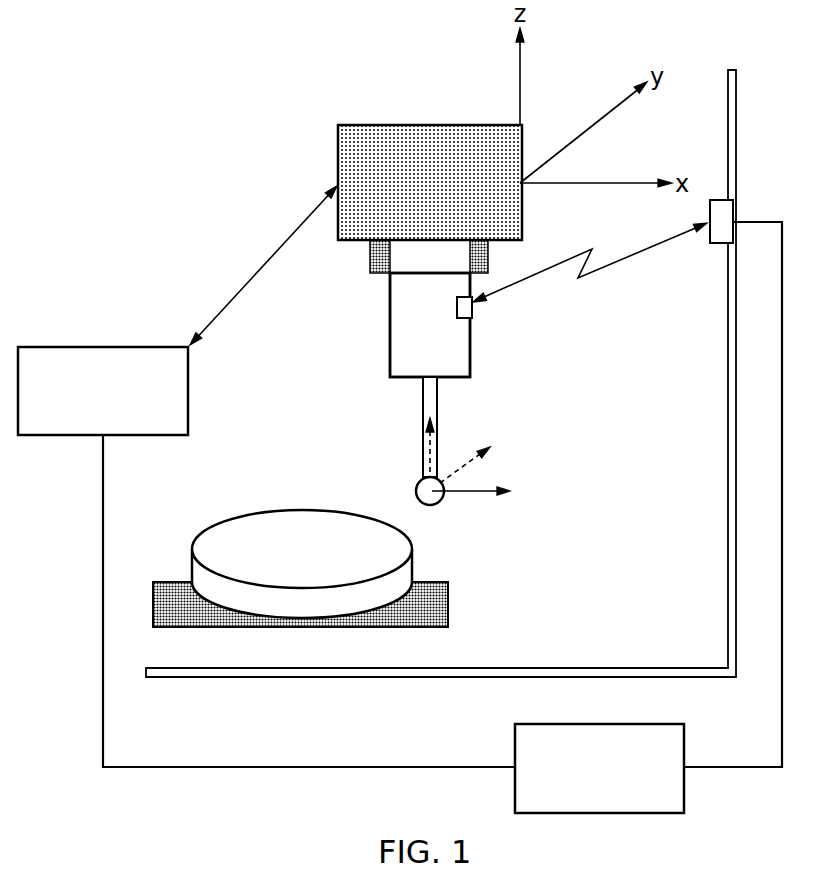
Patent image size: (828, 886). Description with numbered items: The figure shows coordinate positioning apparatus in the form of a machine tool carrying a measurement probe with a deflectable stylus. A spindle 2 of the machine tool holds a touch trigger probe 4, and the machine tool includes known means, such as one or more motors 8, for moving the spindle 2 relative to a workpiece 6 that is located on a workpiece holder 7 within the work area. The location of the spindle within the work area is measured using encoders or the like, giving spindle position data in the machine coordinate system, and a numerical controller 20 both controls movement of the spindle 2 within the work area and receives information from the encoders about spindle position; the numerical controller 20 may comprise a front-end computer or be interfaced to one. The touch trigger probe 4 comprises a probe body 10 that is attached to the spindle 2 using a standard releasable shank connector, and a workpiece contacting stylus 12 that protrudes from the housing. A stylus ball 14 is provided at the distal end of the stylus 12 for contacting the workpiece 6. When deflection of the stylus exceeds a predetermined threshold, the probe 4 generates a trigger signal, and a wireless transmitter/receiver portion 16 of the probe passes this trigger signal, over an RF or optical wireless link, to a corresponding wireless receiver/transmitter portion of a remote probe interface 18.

The spindle 2 is at (403, 125).
The touch trigger probe 4 is at (385, 308).
The workpiece 6 is at (293, 565).
The workpiece holder 7 is at (455, 601).
The motors 8 is at (93, 410).
The probe body 10 is at (415, 345).
The workpiece contacting stylus 12 is at (428, 395).
The stylus ball 14 is at (430, 506).
The wireless transmitter/receiver portion 16 is at (472, 305).
The remote probe interface 18 is at (722, 222).
The numerical controller 20 is at (584, 783).